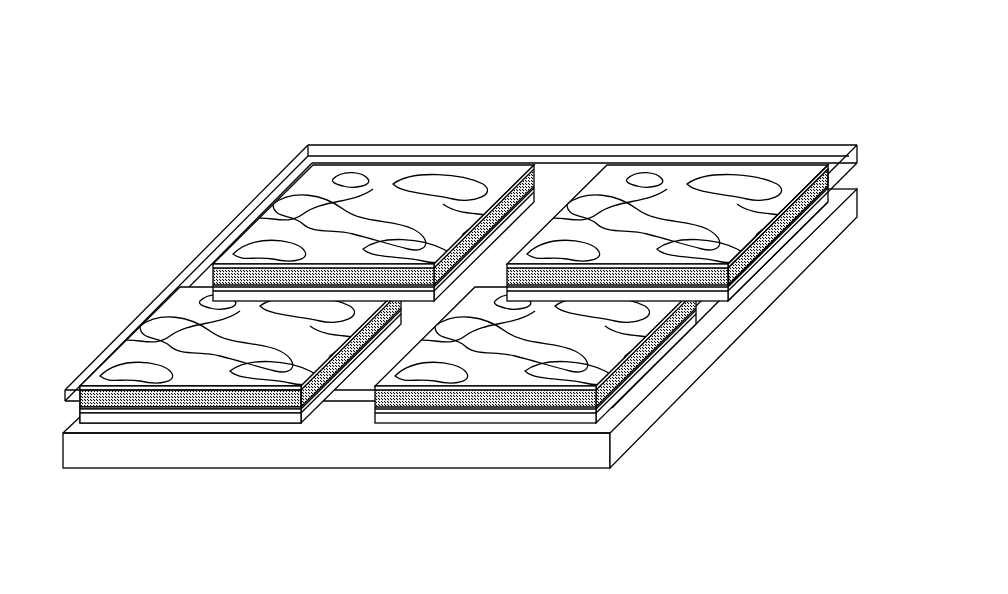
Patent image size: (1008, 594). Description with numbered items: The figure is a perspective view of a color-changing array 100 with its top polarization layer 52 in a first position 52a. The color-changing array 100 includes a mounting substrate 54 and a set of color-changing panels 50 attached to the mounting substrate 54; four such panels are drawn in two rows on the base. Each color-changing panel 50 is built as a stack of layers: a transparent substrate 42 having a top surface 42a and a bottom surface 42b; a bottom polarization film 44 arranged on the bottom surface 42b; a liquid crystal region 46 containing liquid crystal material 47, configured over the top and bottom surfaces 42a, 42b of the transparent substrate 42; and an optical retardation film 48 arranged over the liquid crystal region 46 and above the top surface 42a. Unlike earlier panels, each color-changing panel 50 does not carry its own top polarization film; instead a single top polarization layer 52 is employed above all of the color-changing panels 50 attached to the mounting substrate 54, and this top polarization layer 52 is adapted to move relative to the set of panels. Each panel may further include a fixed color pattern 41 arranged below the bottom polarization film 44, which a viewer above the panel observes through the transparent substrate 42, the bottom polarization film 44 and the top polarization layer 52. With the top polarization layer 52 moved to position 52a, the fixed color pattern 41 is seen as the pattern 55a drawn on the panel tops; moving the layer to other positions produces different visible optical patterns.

The color-changing array 100 is at (116, 220).
The fixed color pattern 41 is at (815, 215).
The transparent substrate 42 is at (78, 394).
The top surface 42a is at (813, 180).
The bottom surface 42b is at (830, 205).
The bottom polarization film 44 is at (96, 405).
The liquid crystal region 46 is at (98, 407).
The liquid crystal material 47 is at (210, 408).
The optical retardation film 48 is at (253, 416).
The color-changing panel 50 is at (137, 440).
The top polarization layer 52 is at (860, 147).
The first position of top polarization layer 52a is at (282, 123).
The mounting substrate 54 is at (630, 436).
The pattern 55a is at (533, 190).